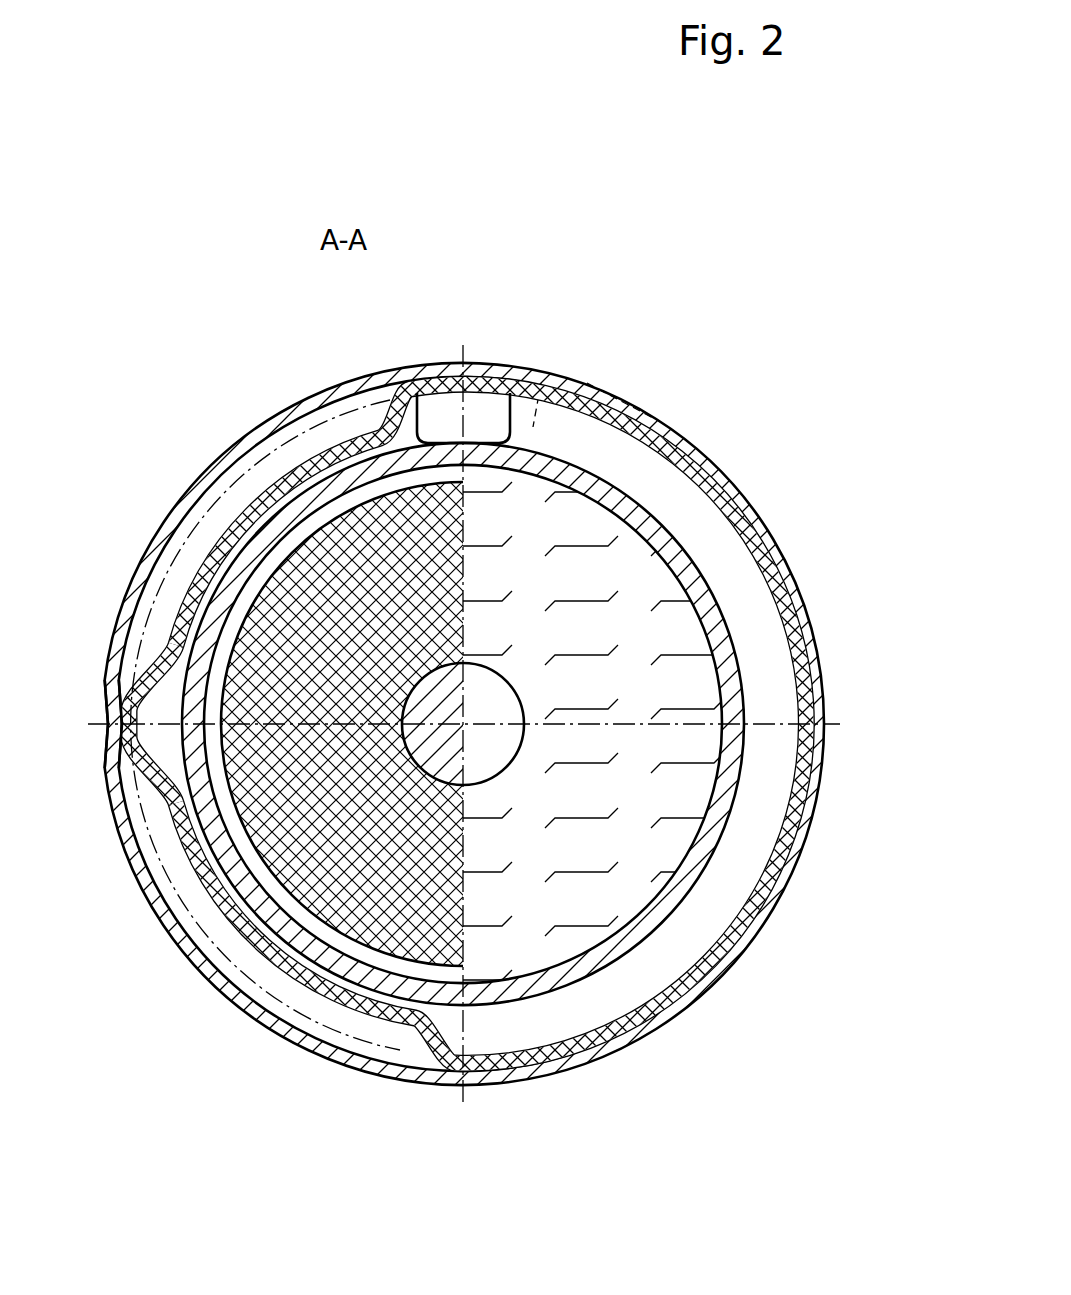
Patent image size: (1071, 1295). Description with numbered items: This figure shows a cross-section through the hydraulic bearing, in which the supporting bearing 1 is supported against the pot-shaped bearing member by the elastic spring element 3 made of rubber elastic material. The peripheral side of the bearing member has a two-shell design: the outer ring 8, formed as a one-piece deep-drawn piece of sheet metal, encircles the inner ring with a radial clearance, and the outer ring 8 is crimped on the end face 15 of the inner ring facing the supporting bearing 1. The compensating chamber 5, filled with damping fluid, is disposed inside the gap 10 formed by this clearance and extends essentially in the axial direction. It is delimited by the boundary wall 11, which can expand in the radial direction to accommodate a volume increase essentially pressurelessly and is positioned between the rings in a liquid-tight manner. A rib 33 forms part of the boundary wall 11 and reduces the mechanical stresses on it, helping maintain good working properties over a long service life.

The supporting bearing 1 is at (431, 758).
The elastic spring element 3 is at (277, 625).
The compensating chamber 5 is at (201, 880).
The outer ring 8 is at (703, 467).
The gap 10 is at (213, 525).
The boundary wall 11 is at (150, 818).
The end face 15 is at (677, 567).
The rib 33 is at (119, 695).